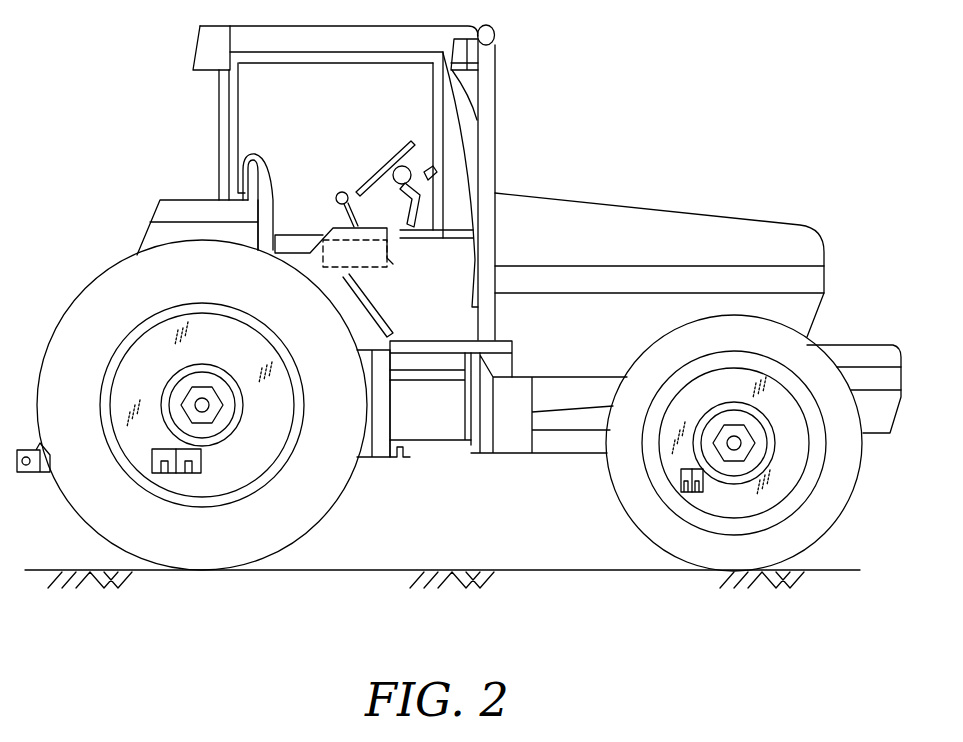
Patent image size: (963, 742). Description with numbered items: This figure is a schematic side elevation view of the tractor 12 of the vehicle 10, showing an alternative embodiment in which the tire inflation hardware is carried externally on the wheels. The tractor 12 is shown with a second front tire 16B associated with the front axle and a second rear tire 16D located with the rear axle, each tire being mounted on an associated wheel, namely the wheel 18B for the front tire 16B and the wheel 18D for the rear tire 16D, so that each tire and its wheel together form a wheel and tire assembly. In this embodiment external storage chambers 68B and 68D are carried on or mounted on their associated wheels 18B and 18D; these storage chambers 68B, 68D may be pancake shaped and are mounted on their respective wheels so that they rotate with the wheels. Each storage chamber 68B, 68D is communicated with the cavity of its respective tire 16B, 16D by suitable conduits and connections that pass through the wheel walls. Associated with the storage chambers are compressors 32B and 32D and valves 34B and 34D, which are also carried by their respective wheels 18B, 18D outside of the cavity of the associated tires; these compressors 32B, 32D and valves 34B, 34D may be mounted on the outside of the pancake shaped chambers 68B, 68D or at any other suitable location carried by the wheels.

The vehicle 10 is at (660, 222).
The tractor 12 is at (564, 312).
The second rear tire 16D is at (300, 523).
The wheel 18D is at (288, 460).
The external storage chamber 68D is at (228, 478).
The compressor 32D is at (165, 467).
The valve 34D is at (188, 467).
The second front tire 16B is at (820, 525).
The wheel 18B is at (810, 477).
The external storage chamber 68B is at (772, 495).
The compressor 32B is at (690, 490).
The valve 34B is at (702, 490).